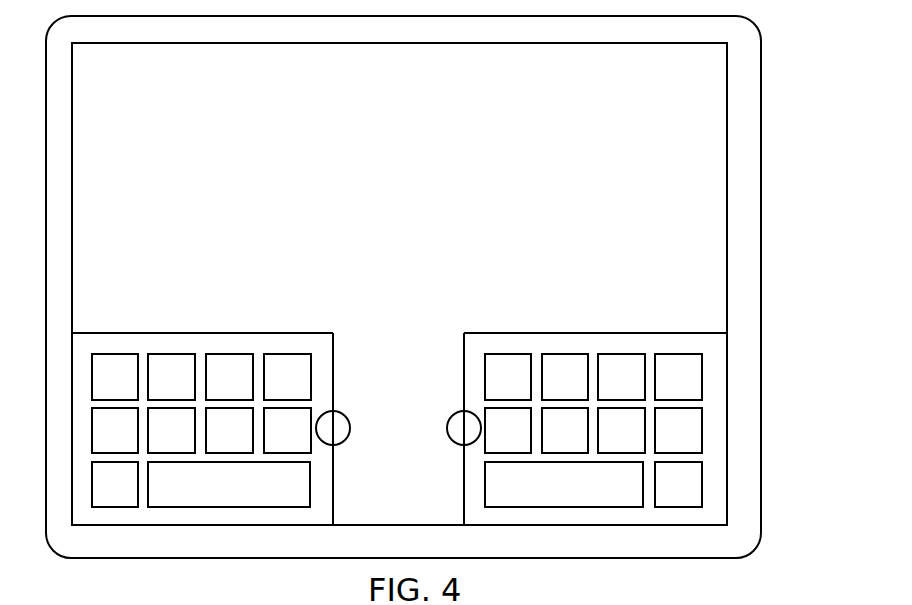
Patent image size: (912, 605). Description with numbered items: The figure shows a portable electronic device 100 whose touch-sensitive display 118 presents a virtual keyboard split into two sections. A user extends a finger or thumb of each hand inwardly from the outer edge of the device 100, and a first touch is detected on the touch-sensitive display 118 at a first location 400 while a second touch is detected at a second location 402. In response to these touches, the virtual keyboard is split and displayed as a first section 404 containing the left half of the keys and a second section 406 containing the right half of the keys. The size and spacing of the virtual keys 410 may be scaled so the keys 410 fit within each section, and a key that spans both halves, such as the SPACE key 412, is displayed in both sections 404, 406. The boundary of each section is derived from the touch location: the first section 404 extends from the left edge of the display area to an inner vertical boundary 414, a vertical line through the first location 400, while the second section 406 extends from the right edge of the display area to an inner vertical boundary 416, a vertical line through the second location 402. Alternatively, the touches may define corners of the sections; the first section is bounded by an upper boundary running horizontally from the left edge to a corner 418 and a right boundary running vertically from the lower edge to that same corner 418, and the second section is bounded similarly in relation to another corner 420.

The portable electronic device 100 is at (832, 212).
The touch-sensitive display 118 is at (512, 43).
The first location 400 is at (348, 427).
The second location 402 is at (448, 428).
The first section 404 is at (250, 345).
The second section 406 is at (557, 345).
The virtual keys 410 is at (702, 377).
The SPACE key 412 is at (310, 490).
The inner vertical boundary 414 is at (333, 362).
The inner vertical boundary 416 is at (464, 514).
The corner 418 is at (334, 333).
The corner 420 is at (463, 333).